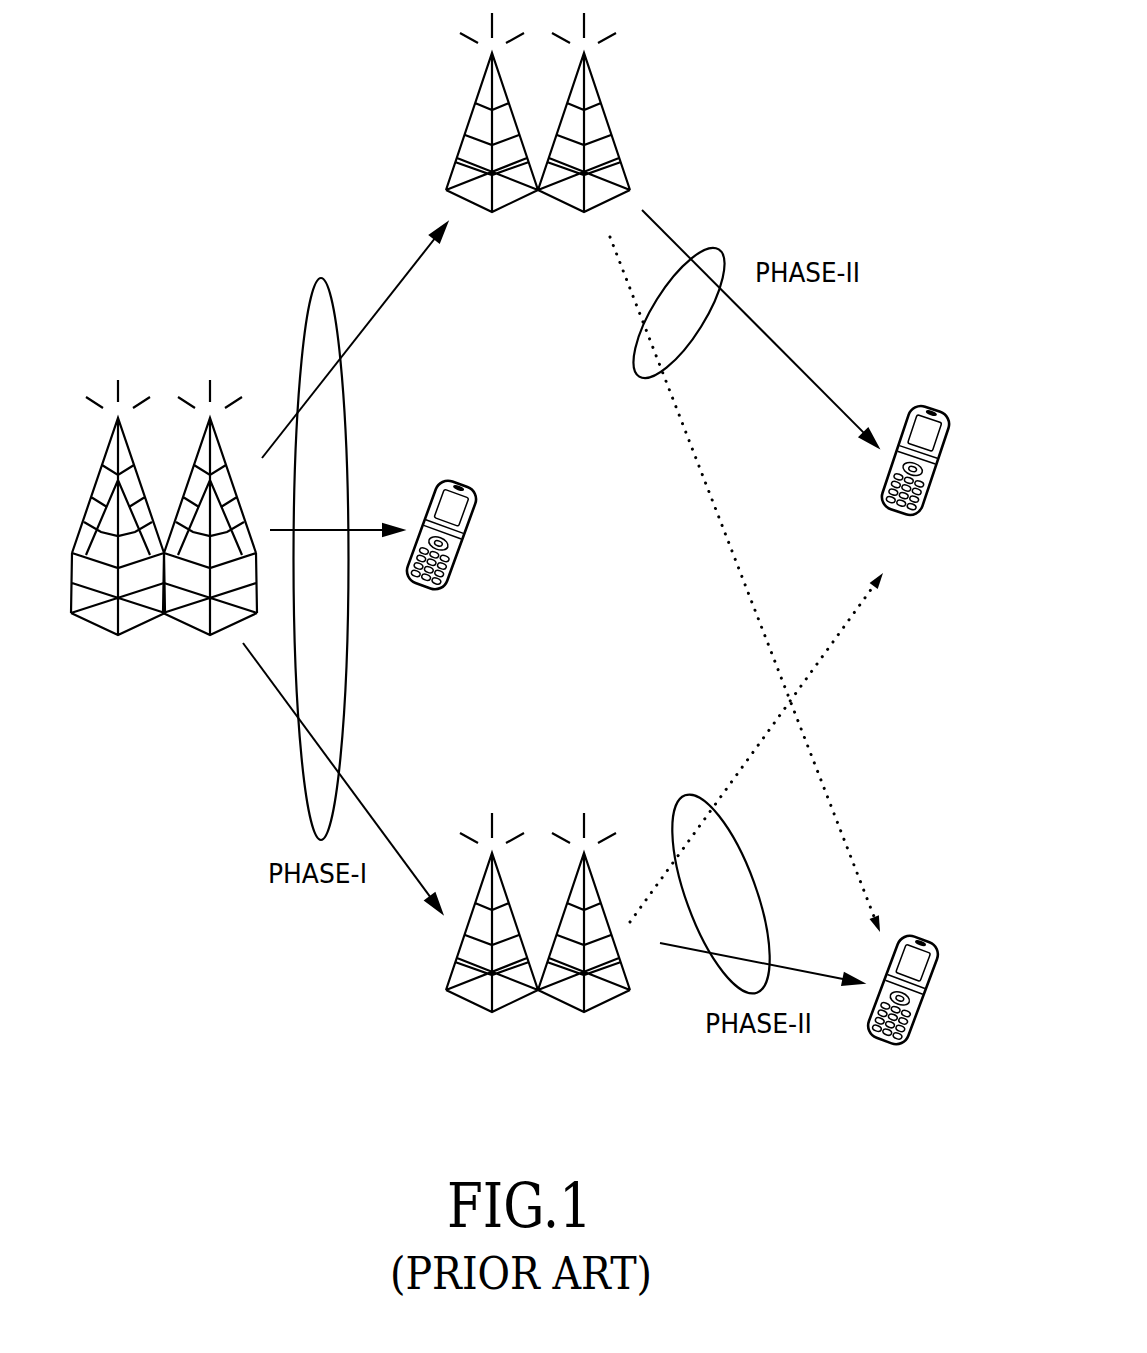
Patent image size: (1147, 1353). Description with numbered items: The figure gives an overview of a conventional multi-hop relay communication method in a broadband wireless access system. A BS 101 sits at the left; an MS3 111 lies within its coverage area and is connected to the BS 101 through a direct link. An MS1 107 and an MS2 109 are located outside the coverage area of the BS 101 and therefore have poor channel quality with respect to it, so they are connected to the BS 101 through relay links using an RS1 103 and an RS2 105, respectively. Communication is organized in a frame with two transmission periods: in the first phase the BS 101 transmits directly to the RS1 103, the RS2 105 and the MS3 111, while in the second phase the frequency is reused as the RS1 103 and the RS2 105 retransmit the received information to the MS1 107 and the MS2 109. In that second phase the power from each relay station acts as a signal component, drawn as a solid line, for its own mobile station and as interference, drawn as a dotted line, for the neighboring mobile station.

The BS 101 is at (164, 529).
The RS1 103 is at (538, 138).
The RS2 105 is at (538, 938).
The MS1 107 is at (907, 480).
The MS2 109 is at (890, 1008).
The MS3 111 is at (432, 555).